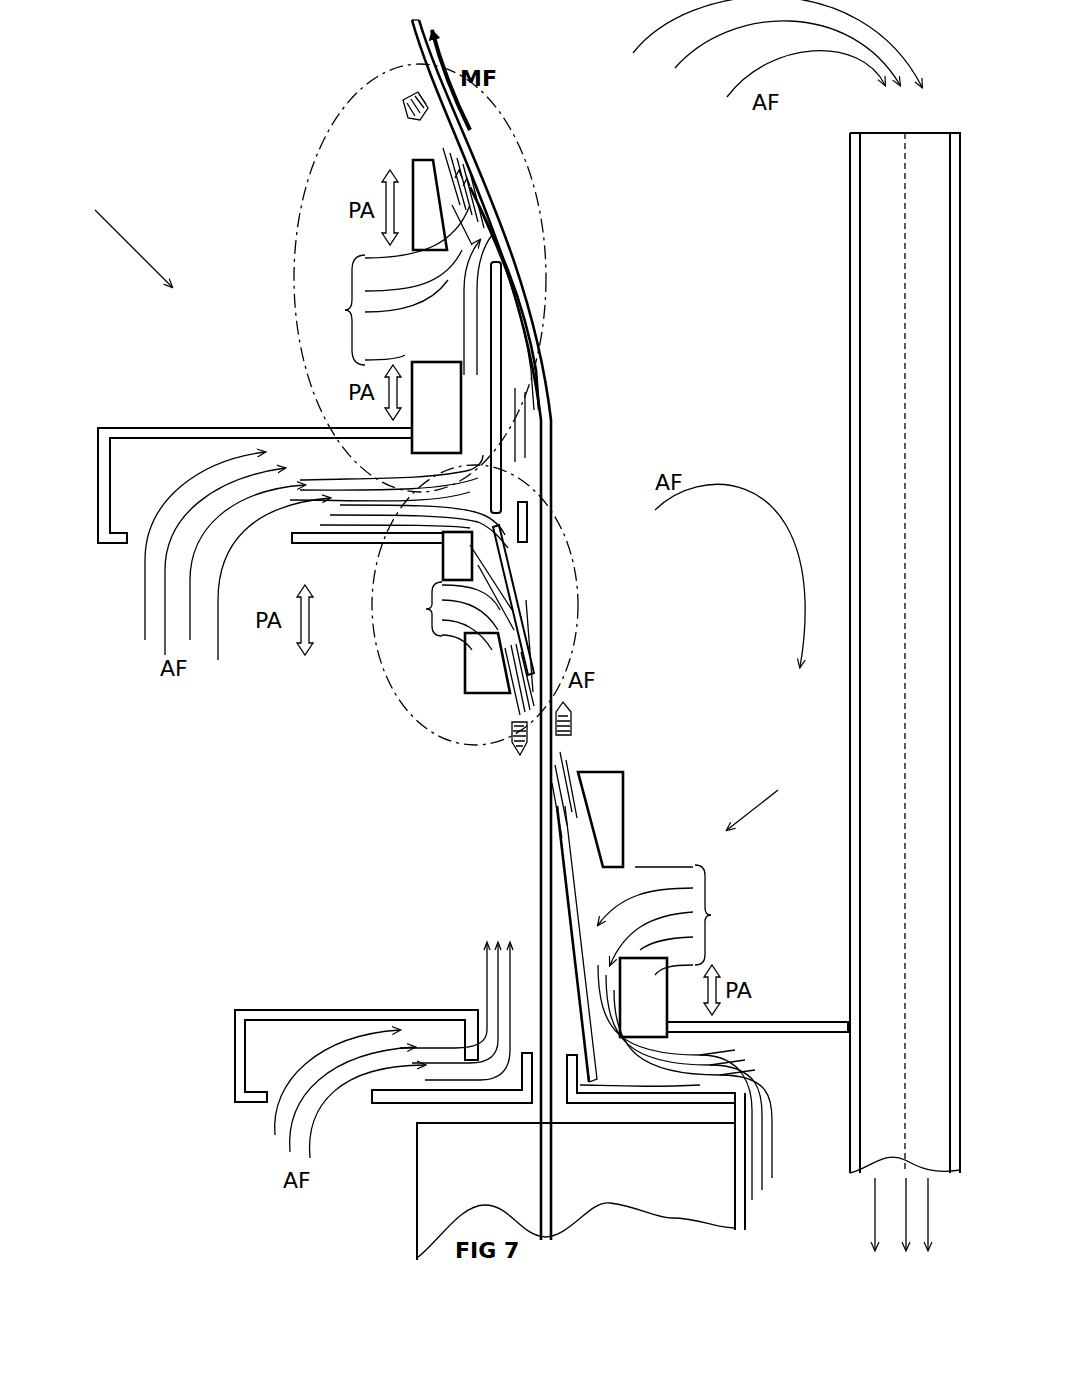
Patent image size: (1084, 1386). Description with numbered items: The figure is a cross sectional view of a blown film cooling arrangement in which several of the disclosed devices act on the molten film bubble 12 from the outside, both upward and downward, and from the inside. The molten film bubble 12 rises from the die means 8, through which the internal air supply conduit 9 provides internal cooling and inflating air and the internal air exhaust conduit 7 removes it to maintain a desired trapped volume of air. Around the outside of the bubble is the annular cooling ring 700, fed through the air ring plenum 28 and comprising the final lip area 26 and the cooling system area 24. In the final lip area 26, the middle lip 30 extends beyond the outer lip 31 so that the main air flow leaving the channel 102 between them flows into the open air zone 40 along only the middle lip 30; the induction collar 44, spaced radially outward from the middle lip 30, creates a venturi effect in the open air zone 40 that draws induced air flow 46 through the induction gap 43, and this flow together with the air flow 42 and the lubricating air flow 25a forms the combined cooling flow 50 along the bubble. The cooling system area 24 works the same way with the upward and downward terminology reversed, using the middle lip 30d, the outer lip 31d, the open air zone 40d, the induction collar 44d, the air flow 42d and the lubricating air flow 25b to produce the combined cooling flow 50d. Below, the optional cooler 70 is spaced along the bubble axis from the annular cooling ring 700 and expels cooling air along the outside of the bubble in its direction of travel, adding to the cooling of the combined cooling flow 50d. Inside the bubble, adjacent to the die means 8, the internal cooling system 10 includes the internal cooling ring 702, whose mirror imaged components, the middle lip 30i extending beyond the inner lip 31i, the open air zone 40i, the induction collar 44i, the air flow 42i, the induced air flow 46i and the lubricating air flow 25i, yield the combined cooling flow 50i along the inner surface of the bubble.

The internal air exhaust conduit 7 is at (850, 320).
The die means 8 is at (600, 1165).
The internal air supply conduit 9 is at (740, 1210).
The internal cooling system 10 is at (778, 1037).
The molten film bubble 12 is at (546, 428).
The cooling system area 24 is at (375, 652).
The final lip area 26 is at (295, 250).
The air ring plenum 28 is at (125, 458).
The middle lip 30 is at (497, 300).
The outer lip 31 is at (435, 445).
The open air zone 40 is at (345, 310).
The air flow 42 is at (443, 153).
The induction gap 43 is at (462, 212).
The induction collar 44 is at (420, 170).
The induced air flow 46 is at (420, 275).
The combined cooling flow 50 is at (405, 98).
The optional cooler 70 is at (262, 1040).
The channel 102 is at (478, 395).
The annular cooling ring 700 is at (106, 242).
The internal cooling ring 702 is at (779, 810).
The lubricating air flow 25a is at (497, 232).
The lubricating air flow 25b is at (534, 640).
The lubricating air flow 25i is at (563, 826).
The middle lip 30d is at (513, 600).
The middle lip 30i is at (568, 865).
The outer lip 31d is at (453, 552).
The inner lip 31i is at (655, 990).
The open air zone 40d is at (439, 616).
The open air zone 40i is at (711, 915).
The air flow 42d is at (500, 703).
The air flow 42i is at (573, 770).
The induction collar 44d is at (485, 680).
The induction collar 44i is at (608, 783).
The induced air flow 46i is at (645, 912).
The combined cooling flow 50d is at (517, 735).
The combined cooling flow 50i is at (567, 710).